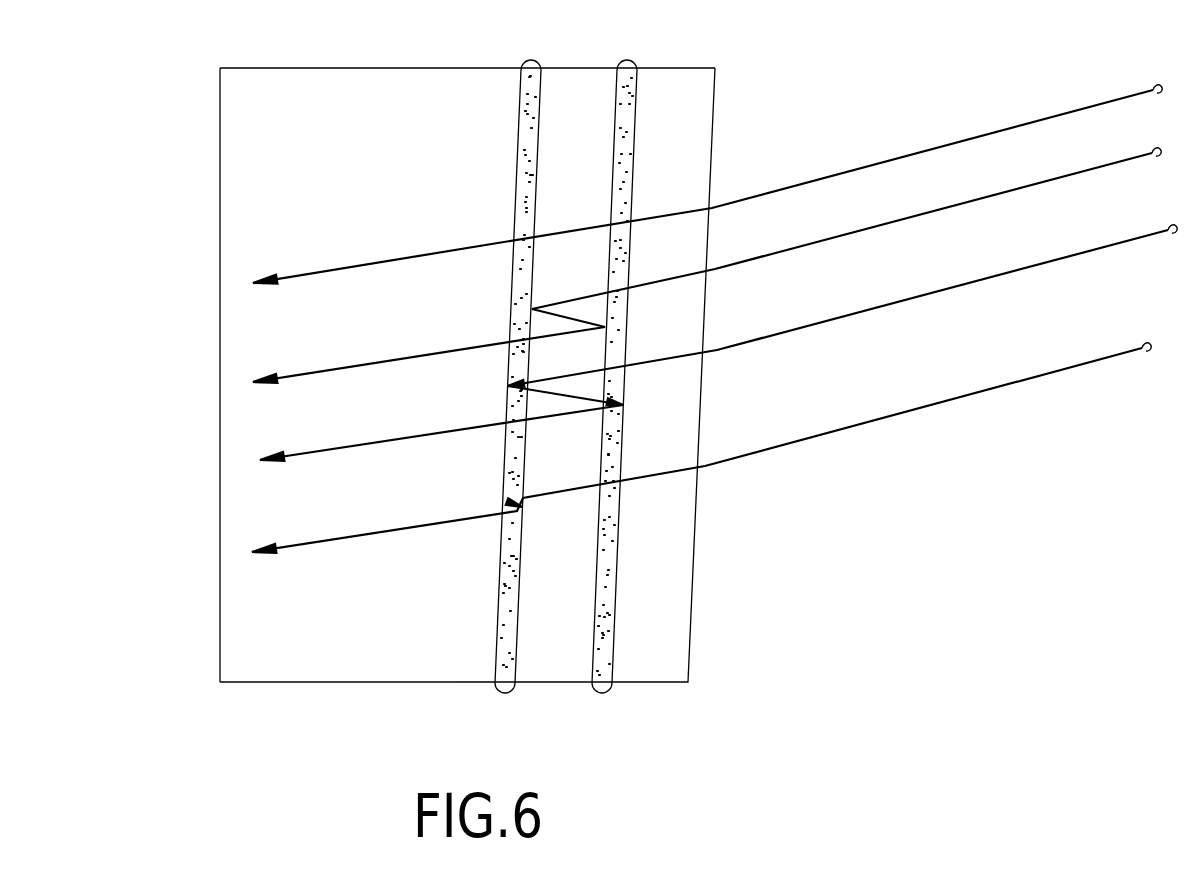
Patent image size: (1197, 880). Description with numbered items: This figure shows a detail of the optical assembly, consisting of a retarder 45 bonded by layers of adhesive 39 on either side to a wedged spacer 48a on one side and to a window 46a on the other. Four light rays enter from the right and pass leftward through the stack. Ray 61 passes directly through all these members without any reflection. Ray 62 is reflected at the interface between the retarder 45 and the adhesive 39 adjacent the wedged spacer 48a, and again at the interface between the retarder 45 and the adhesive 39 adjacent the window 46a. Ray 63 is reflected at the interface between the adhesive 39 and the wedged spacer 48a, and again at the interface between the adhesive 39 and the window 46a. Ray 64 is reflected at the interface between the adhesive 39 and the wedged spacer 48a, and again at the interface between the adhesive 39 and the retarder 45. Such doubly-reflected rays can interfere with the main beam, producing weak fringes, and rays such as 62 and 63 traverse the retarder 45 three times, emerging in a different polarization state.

The adhesive 39 is at (532, 58).
The retarder 45 is at (552, 682).
The window 46a is at (662, 683).
The wedged spacer 48a is at (437, 683).
The ray 61 is at (1107, 102).
The ray 62 is at (1120, 162).
The ray 63 is at (1108, 247).
The ray 64 is at (1117, 358).